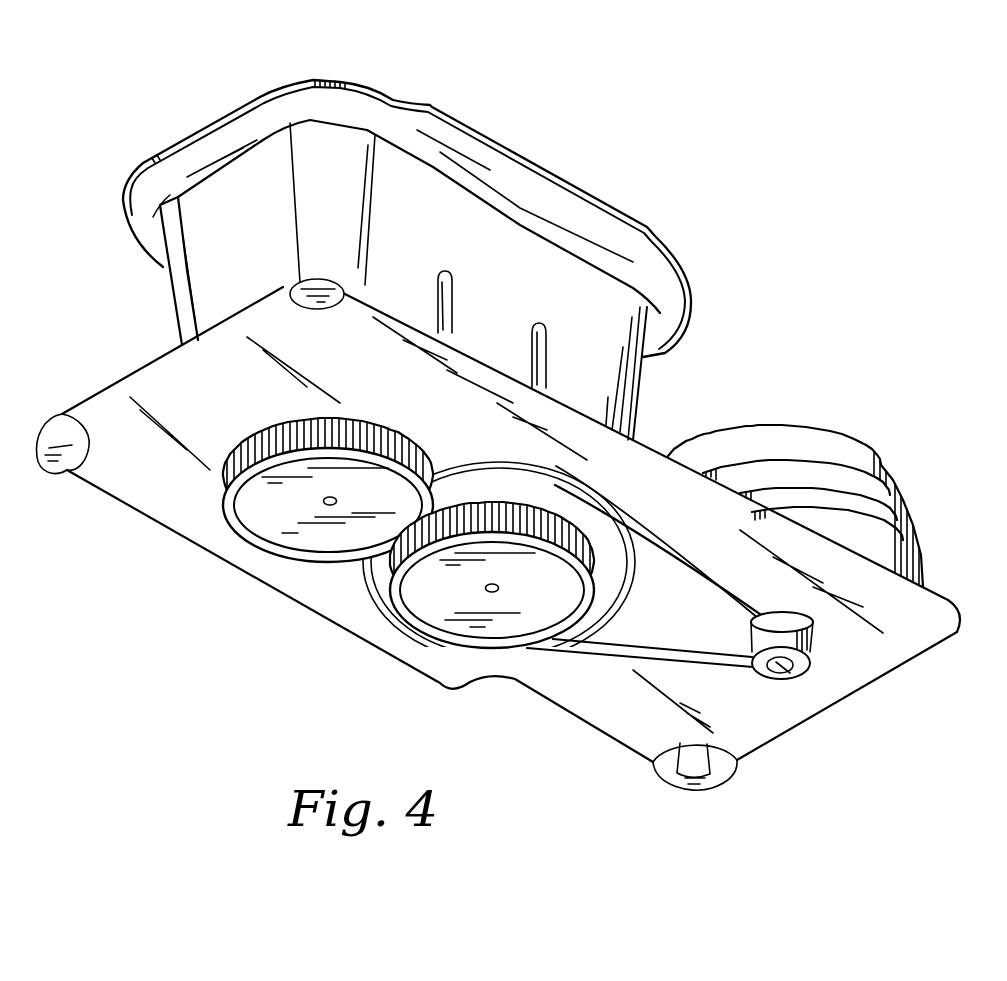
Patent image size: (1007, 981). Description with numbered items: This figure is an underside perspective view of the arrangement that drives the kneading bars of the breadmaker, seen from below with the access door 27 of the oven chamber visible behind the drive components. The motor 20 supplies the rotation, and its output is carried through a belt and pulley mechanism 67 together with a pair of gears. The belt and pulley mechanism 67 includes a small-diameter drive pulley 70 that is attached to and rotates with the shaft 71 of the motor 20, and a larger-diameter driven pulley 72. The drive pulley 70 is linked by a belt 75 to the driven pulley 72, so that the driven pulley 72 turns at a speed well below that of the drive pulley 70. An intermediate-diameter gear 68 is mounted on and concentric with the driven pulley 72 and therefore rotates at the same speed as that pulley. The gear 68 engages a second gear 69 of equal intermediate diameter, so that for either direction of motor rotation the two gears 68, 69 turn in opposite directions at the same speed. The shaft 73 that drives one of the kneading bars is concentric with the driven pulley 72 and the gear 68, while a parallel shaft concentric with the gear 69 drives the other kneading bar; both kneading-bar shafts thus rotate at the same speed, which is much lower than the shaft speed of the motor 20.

The access door 27 is at (337, 100).
The motor 20 is at (832, 448).
The belt and pulley mechanism 67 is at (320, 662).
The gear 68 is at (480, 633).
The gear 69 is at (313, 540).
The drive pulley 70 is at (797, 660).
The shaft 71 is at (790, 668).
The driven pulley 72 is at (583, 515).
The shaft 73 is at (498, 590).
The belt 75 is at (630, 650).